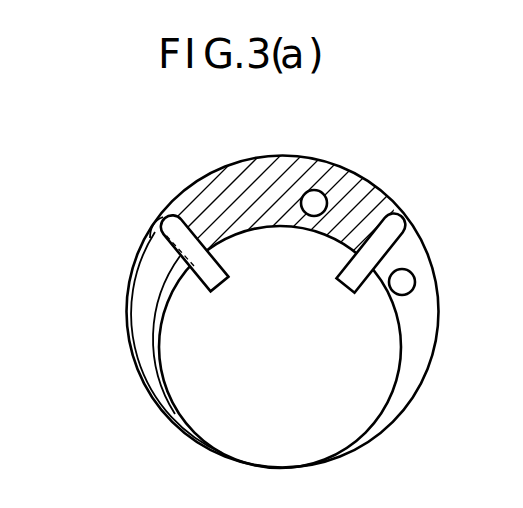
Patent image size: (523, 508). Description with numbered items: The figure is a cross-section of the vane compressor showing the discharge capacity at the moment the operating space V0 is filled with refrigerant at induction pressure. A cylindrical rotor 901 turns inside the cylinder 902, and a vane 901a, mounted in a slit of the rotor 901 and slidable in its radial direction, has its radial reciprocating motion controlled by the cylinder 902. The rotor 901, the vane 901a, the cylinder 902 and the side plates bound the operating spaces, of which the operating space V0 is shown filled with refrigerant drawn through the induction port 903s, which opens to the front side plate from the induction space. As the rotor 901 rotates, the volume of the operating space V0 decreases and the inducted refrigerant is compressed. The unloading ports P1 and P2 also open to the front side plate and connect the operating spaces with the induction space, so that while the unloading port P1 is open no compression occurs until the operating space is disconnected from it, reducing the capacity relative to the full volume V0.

The cylinder 902 is at (424, 366).
The rotor 901 is at (387, 412).
The vane 901a is at (162, 213).
The induction port 903s is at (136, 333).
The operating space V0 is at (283, 182).
The unloading port P1 is at (318, 199).
The unloading port P2 is at (407, 281).